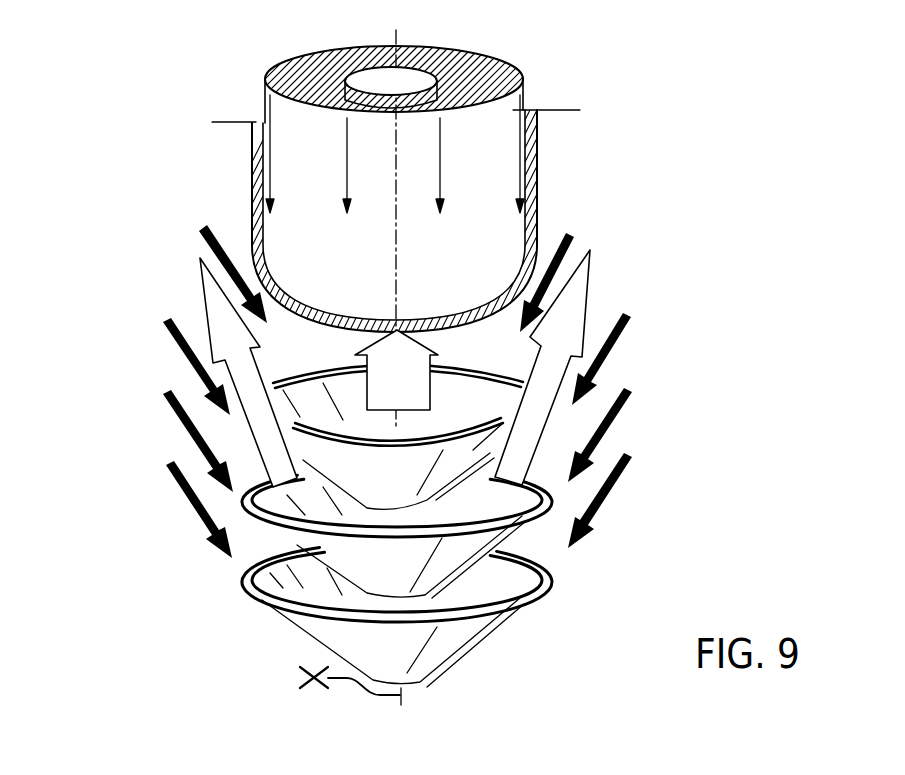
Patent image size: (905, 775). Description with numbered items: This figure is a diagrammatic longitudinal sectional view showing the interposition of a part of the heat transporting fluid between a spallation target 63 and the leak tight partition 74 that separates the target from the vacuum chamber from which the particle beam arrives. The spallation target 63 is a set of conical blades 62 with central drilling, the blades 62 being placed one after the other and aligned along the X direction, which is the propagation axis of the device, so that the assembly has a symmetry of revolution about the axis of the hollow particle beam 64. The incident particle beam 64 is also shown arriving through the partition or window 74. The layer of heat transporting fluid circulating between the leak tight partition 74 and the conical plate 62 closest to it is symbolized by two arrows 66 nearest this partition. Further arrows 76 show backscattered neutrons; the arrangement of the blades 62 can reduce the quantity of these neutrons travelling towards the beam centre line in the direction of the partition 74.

The hollow particle beam 64 is at (290, 76).
The leak tight partition 74 is at (447, 317).
The arrows 66 is at (172, 472).
The arrows 76 is at (547, 363).
The conical plate 62 is at (283, 622).
The spallation target 63 is at (556, 562).